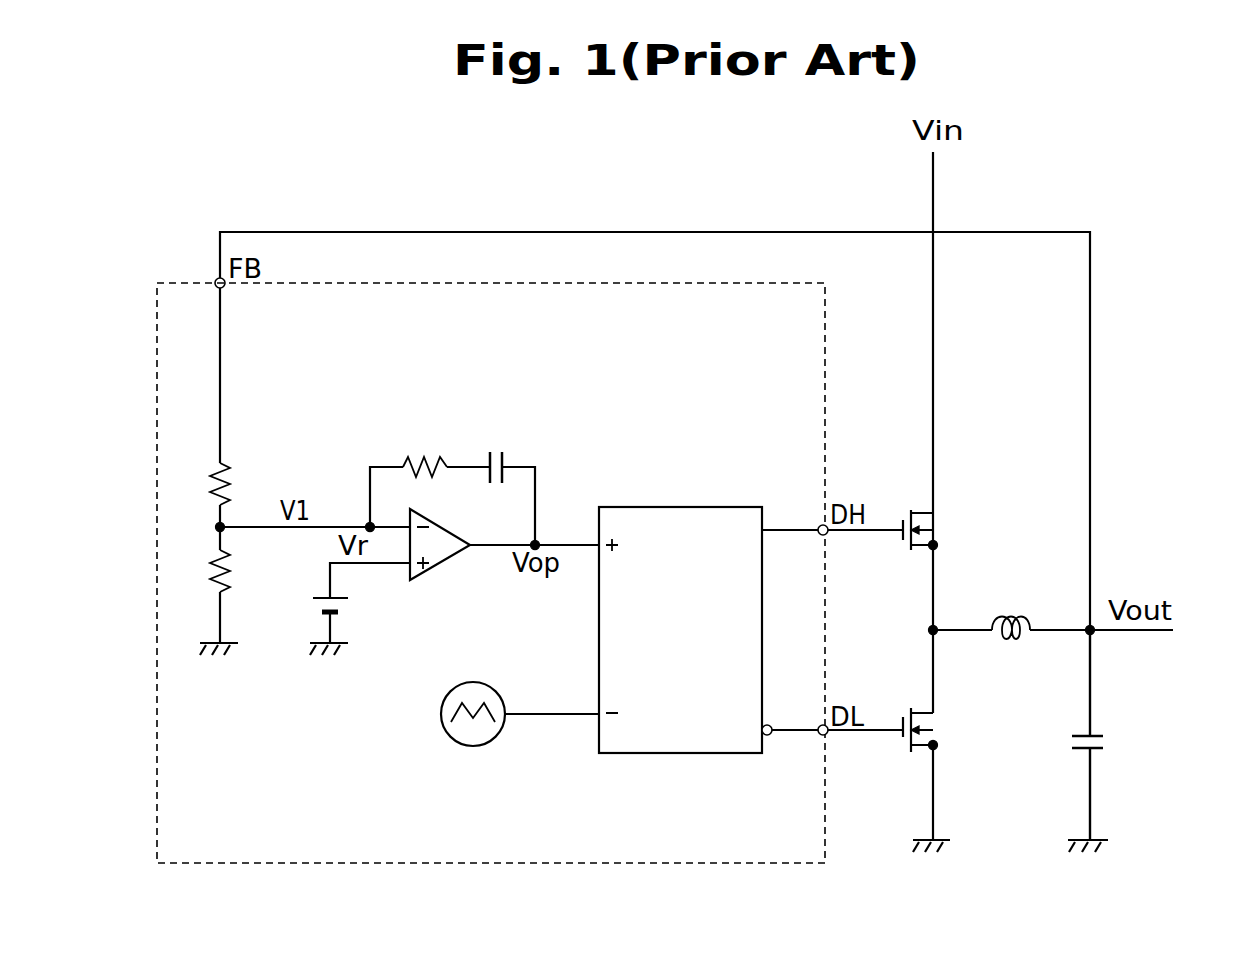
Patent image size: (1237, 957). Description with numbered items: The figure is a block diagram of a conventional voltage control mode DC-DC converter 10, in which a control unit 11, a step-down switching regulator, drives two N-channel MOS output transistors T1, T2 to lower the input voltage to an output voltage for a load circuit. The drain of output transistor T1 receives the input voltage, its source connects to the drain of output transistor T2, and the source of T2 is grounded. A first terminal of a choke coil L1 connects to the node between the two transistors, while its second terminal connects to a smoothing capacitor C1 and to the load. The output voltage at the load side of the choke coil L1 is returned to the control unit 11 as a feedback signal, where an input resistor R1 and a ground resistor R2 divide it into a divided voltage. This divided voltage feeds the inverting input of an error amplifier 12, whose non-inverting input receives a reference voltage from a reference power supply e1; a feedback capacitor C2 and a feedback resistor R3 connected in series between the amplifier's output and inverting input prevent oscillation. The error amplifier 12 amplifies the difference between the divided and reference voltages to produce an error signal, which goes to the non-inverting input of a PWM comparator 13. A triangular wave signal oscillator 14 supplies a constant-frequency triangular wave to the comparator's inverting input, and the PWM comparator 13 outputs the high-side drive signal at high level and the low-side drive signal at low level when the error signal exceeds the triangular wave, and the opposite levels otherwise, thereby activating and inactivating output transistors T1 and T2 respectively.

The DC-DC converter 10 is at (1158, 202).
The control unit 11 is at (827, 325).
The error amplifier 12 is at (440, 527).
The PWM comparator 13 is at (737, 507).
The triangular wave signal oscillator 14 is at (472, 682).
The input resistor R1 is at (232, 477).
The ground resistor R2 is at (232, 565).
The feedback resistor R3 is at (413, 461).
The smoothing capacitor C1 is at (1072, 735).
The feedback capacitor C2 is at (506, 461).
The reference power supply e1 is at (340, 614).
The output transistor T1 is at (925, 517).
The output transistor T2 is at (925, 717).
The choke coil L1 is at (1005, 618).